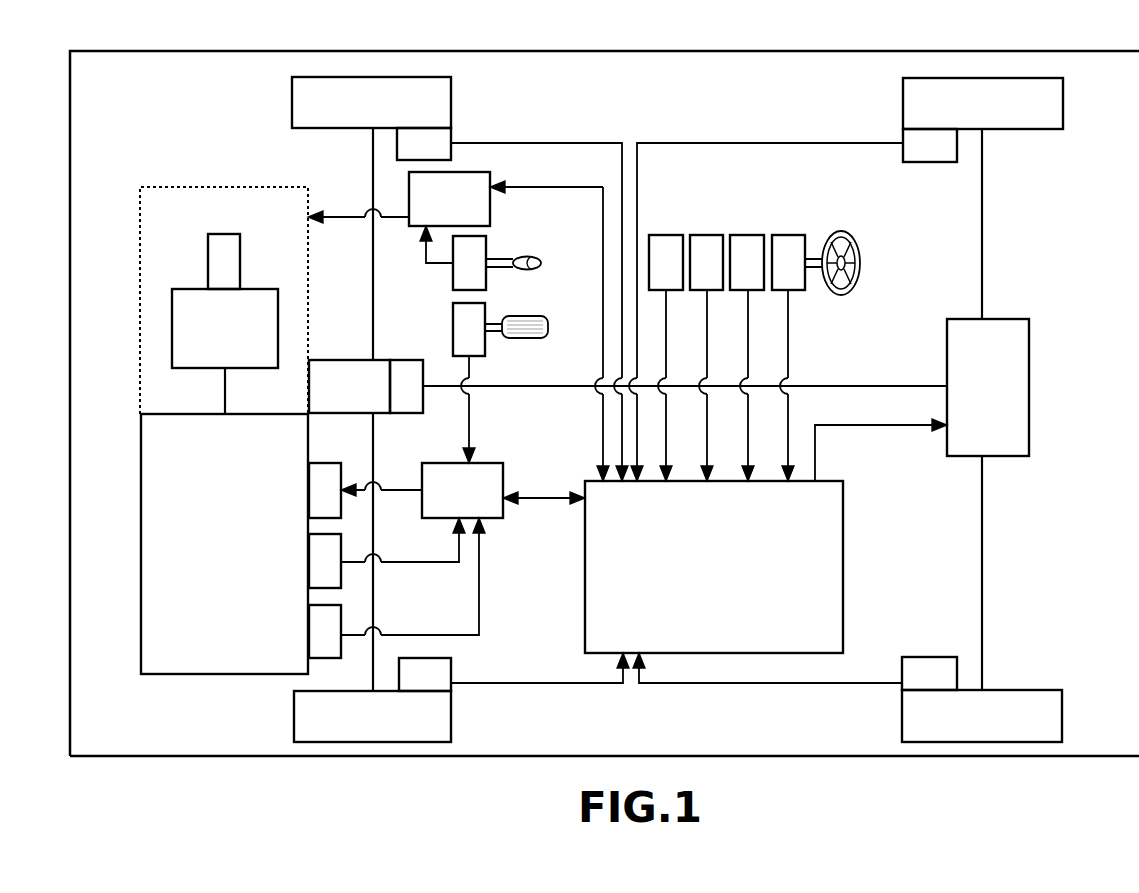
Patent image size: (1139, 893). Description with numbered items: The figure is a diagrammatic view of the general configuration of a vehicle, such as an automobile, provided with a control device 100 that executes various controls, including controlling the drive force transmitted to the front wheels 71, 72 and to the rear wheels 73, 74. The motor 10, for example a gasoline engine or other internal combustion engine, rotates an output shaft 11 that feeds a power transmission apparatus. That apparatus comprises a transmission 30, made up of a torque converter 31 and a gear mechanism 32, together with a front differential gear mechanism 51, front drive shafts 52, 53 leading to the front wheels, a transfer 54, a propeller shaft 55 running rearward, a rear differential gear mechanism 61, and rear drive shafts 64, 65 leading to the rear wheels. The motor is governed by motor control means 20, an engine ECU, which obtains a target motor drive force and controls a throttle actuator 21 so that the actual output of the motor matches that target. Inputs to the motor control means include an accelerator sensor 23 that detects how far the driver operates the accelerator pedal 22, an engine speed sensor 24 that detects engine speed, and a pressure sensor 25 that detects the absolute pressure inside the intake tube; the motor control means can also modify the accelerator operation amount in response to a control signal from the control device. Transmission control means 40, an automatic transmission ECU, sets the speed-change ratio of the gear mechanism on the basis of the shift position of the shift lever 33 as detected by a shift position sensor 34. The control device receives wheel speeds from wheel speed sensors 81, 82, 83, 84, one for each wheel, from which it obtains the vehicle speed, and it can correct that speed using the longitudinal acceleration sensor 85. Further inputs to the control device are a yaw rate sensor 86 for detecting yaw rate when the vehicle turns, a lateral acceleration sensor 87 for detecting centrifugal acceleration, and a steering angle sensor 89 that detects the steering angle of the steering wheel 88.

The motor 10 is at (228, 676).
The output shaft 11 is at (227, 394).
The motor control means 20 is at (488, 463).
The throttle actuator 21 is at (330, 463).
The accelerator pedal 22 is at (548, 328).
The accelerator sensor 23 is at (485, 305).
The engine speed sensor 24 is at (330, 534).
The pressure sensor 25 is at (330, 605).
The transmission 30 is at (262, 187).
The torque converter 31 is at (262, 289).
The gear mechanism 32 is at (208, 266).
The shift lever 33 is at (541, 263).
The shift position sensor 34 is at (486, 240).
The transmission control means 40 is at (490, 178).
The front differential gear mechanism 51 is at (350, 360).
The front drive shaft 52 is at (375, 338).
The front drive shaft 53 is at (375, 455).
The transfer 54 is at (423, 366).
The propeller shaft 55 is at (520, 386).
The rear differential gear mechanism 61 is at (1018, 319).
The rear drive shaft 64 is at (984, 272).
The rear drive shaft 65 is at (984, 508).
The front wheel 71 is at (451, 90).
The front wheel 72 is at (451, 714).
The rear wheel 73 is at (1008, 129).
The rear wheel 74 is at (1015, 690).
The wheel speed sensor 81 is at (451, 132).
The wheel speed sensor 82 is at (451, 666).
The wheel speed sensor 83 is at (930, 162).
The wheel speed sensor 84 is at (930, 657).
The longitudinal acceleration sensor 85 is at (666, 235).
The yaw rate sensor 86 is at (707, 235).
The lateral acceleration sensor 87 is at (748, 235).
The steering wheel 88 is at (860, 263).
The steering angle sensor 89 is at (788, 235).
The control device 100 is at (843, 556).